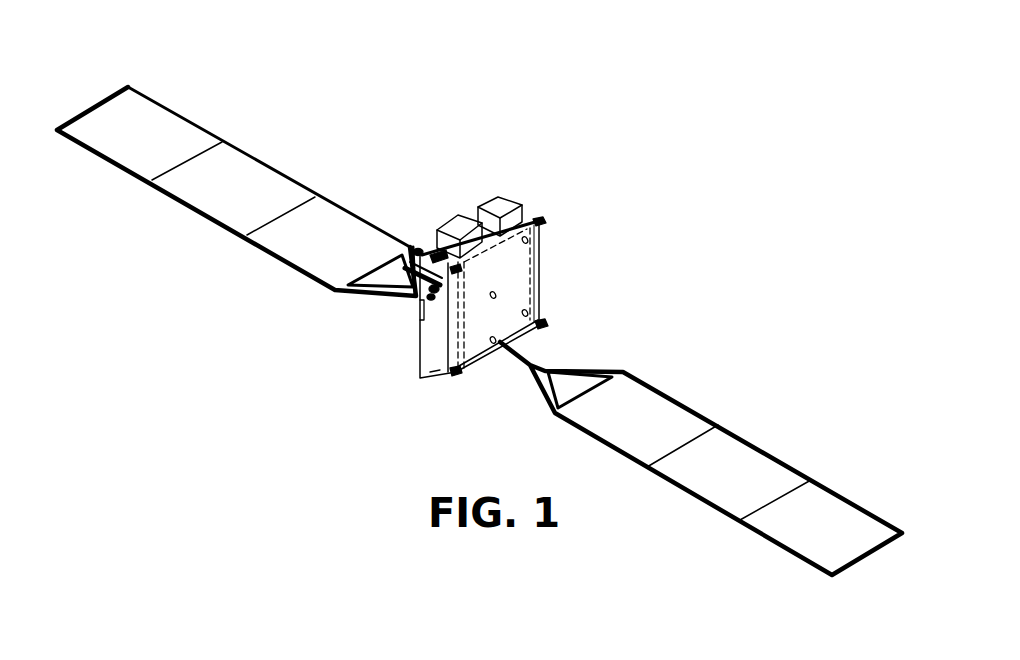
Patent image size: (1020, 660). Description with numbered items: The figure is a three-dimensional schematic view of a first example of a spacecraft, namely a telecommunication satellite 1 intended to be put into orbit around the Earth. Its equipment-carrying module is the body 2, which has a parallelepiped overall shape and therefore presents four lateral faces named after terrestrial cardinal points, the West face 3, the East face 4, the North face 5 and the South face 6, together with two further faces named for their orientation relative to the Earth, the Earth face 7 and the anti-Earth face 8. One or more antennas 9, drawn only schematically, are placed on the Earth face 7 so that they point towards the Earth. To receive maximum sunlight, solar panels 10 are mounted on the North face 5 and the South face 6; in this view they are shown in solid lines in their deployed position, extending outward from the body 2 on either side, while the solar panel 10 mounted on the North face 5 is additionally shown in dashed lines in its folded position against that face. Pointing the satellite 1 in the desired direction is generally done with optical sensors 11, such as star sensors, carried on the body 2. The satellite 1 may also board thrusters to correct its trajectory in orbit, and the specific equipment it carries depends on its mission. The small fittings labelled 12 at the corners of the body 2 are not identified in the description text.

The telecommunication satellite 1 is at (508, 152).
The body 2 is at (424, 384).
The West face 3 is at (430, 317).
The East face 4 is at (542, 277).
The North face 5 is at (450, 338).
The South face 6 is at (415, 312).
The Earth face 7 is at (433, 252).
The anti-Earth face 8 is at (436, 378).
The antennas 9 is at (496, 203).
The solar panels 10 is at (252, 170).
The optical sensors 11 is at (420, 248).
The corner fittings / brackets 12 is at (542, 219).